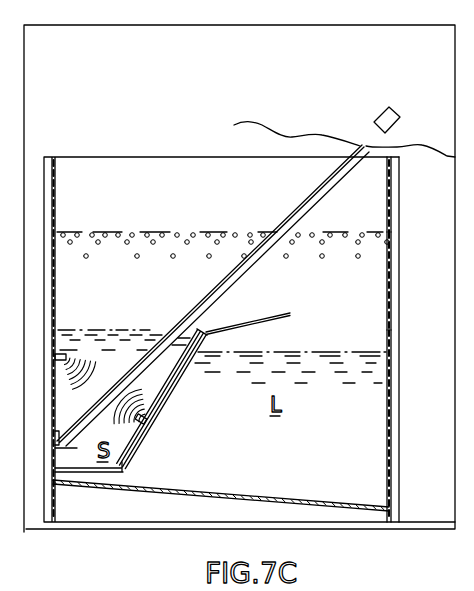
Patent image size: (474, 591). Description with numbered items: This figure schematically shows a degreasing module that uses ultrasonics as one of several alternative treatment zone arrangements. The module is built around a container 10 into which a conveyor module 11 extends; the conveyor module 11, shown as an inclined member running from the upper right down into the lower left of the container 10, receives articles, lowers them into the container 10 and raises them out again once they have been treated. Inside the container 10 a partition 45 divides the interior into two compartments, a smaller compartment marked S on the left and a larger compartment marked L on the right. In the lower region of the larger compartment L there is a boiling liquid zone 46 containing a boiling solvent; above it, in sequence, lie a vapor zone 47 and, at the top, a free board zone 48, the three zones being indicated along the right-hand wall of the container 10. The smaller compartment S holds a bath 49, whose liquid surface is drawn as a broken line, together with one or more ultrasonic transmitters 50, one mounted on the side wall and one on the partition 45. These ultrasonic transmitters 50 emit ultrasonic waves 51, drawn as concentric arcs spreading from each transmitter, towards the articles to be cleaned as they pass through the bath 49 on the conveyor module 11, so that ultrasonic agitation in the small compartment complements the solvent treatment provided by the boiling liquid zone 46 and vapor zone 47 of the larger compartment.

The container 10 is at (387, 204).
The conveyor module 11 is at (316, 191).
The partition 45 is at (163, 404).
The boiling liquid zone 46 is at (378, 384).
The vapor zone 47 is at (379, 261).
The free board zone 48 is at (379, 207).
The bath 49 is at (134, 346).
The ultrasonic transmitter 50 is at (60, 352).
The ultrasonic waves 51 is at (98, 363).